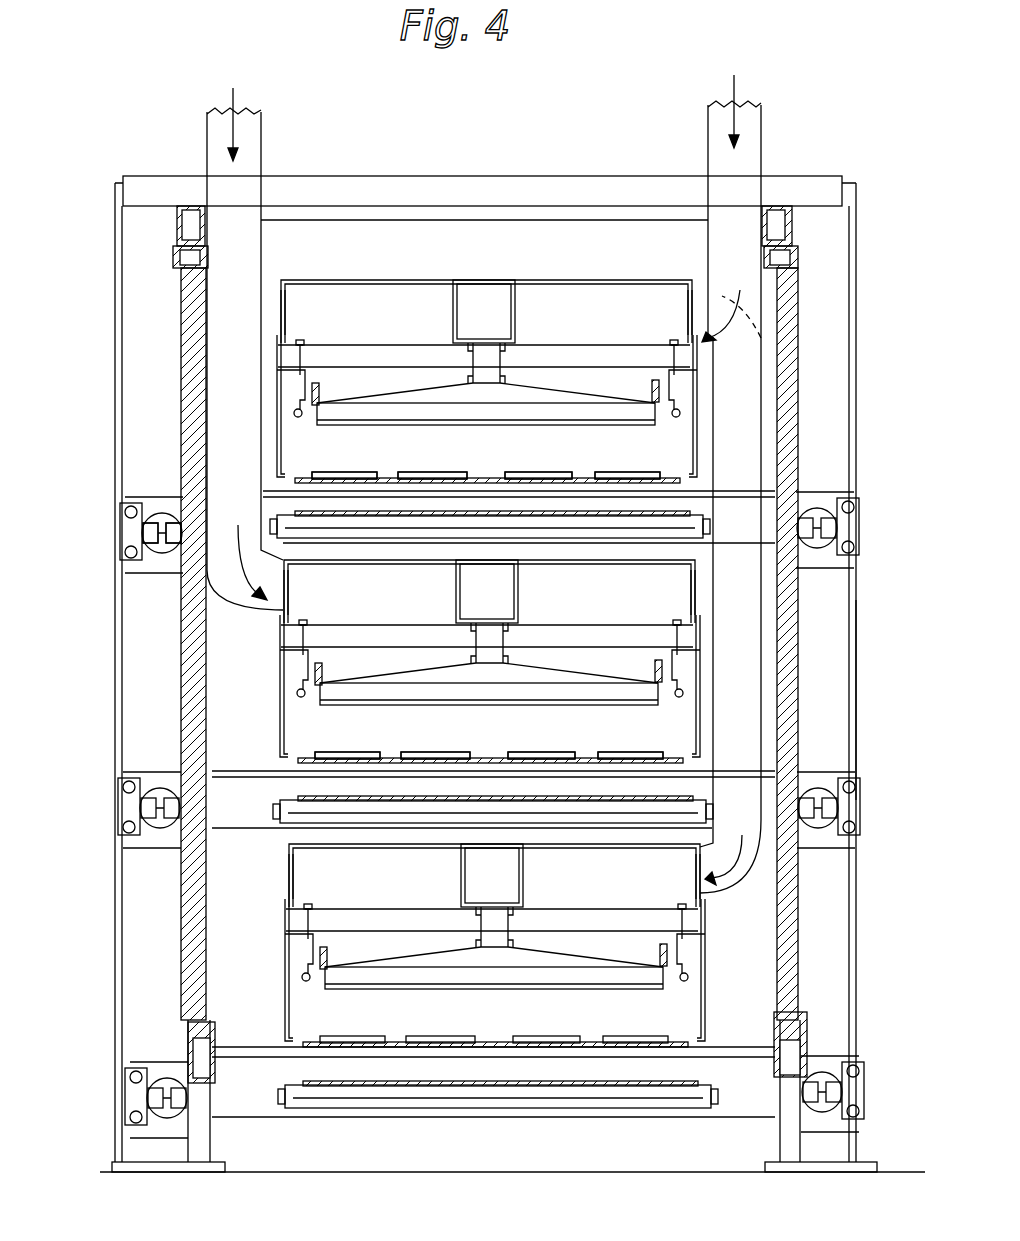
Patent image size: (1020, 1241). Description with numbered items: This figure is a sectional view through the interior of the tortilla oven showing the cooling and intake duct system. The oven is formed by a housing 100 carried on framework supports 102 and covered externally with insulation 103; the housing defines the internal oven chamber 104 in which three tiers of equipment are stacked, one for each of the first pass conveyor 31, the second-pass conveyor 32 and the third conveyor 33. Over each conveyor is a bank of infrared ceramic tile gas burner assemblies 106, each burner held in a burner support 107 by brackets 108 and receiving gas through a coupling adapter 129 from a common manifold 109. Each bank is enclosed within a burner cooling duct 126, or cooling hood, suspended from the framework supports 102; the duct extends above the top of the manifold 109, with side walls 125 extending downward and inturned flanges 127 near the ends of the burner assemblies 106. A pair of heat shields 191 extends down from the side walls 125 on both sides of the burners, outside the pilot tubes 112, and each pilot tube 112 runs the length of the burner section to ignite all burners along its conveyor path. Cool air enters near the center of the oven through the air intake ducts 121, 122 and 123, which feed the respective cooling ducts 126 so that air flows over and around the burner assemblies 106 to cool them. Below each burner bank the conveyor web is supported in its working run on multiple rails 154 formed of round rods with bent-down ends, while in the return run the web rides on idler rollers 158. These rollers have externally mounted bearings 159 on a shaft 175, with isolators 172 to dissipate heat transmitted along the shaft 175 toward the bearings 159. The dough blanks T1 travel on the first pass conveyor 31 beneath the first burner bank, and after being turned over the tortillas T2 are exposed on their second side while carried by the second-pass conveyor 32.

The housing 100 is at (448, 218).
The framework supports 102 is at (345, 347).
The insulation 103 is at (183, 372).
The oven chamber 104 is at (528, 730).
The infrared ceramic tile gas burner assemblies 106 is at (603, 388).
The burner support 107 is at (427, 403).
The brackets 108 is at (322, 398).
The common manifold 109 is at (460, 312).
The pilot tube 112 is at (675, 417).
The air intake duct 121 is at (715, 154).
The air intake duct 122 is at (262, 128).
The air intake duct 123 is at (800, 690).
The side walls 125 is at (281, 308).
The burner cooling ducts 126 is at (612, 262).
The inturned flanges 127 is at (276, 380).
The coupling adapter 129 is at (498, 362).
The rails 154 is at (337, 483).
The idler rollers 158 is at (543, 1095).
The bearings 159 is at (120, 528).
The isolators 172 is at (150, 517).
The shaft 175 is at (162, 512).
The heat shields 191 is at (277, 448).
The first pass conveyor 31 is at (490, 473).
The second-pass conveyor 32 is at (485, 752).
The third pass conveyor 33 is at (497, 1035).
The dough blanks T1 is at (420, 472).
The tortillas T2 is at (418, 753).